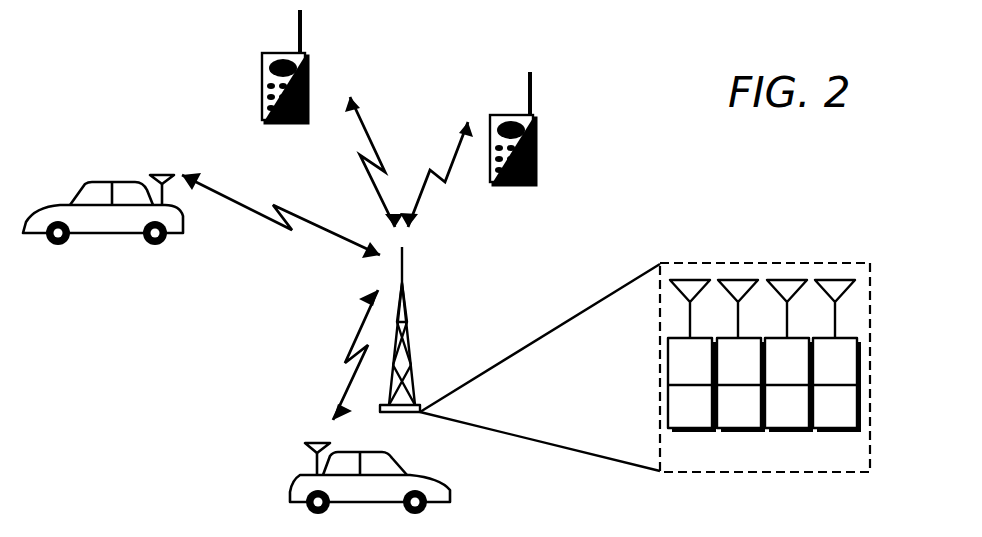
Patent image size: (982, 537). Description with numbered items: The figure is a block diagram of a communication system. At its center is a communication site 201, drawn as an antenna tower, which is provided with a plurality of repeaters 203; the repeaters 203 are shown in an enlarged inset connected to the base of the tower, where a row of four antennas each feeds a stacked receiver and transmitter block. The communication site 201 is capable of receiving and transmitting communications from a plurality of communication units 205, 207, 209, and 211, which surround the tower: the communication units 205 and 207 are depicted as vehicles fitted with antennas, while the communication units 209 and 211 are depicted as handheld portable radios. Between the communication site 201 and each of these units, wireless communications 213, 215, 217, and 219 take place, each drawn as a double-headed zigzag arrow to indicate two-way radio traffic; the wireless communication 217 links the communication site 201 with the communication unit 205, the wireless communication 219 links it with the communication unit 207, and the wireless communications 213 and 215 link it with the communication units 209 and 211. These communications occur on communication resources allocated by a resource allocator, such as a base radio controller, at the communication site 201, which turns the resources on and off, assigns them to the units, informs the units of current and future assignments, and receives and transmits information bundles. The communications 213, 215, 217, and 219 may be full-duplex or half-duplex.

The communication site 201 is at (403, 310).
The repeaters 203 is at (730, 472).
The communication unit 205 is at (88, 182).
The communication unit 207 is at (298, 481).
The communication unit 209 is at (262, 97).
The communication unit 211 is at (535, 152).
The wireless communication 213 is at (363, 130).
The wireless communication 215 is at (447, 162).
The wireless communication 217 is at (272, 222).
The wireless communication 219 is at (348, 358).